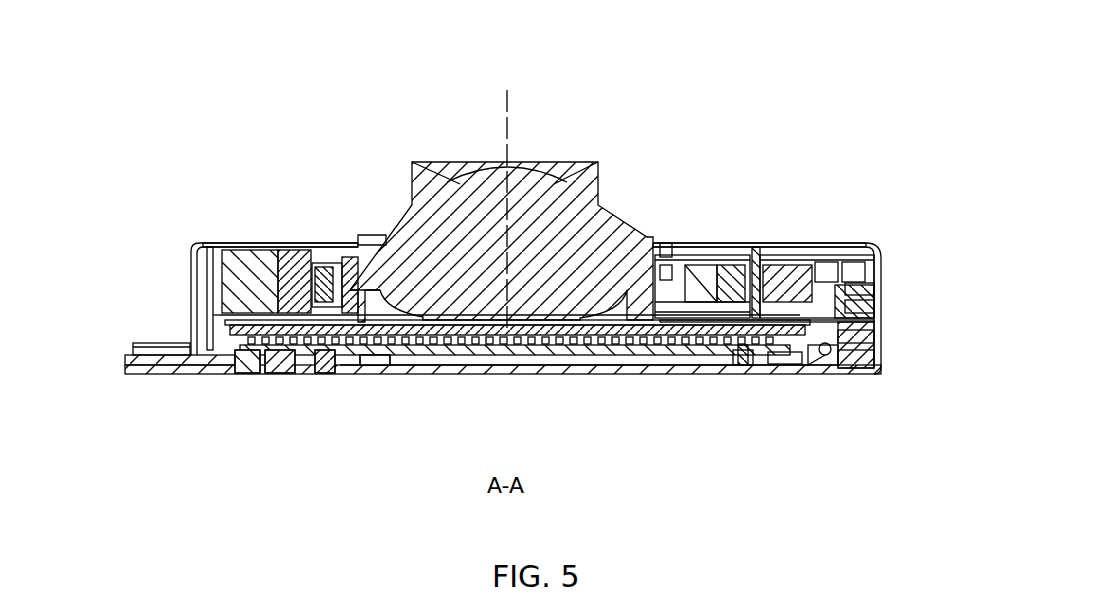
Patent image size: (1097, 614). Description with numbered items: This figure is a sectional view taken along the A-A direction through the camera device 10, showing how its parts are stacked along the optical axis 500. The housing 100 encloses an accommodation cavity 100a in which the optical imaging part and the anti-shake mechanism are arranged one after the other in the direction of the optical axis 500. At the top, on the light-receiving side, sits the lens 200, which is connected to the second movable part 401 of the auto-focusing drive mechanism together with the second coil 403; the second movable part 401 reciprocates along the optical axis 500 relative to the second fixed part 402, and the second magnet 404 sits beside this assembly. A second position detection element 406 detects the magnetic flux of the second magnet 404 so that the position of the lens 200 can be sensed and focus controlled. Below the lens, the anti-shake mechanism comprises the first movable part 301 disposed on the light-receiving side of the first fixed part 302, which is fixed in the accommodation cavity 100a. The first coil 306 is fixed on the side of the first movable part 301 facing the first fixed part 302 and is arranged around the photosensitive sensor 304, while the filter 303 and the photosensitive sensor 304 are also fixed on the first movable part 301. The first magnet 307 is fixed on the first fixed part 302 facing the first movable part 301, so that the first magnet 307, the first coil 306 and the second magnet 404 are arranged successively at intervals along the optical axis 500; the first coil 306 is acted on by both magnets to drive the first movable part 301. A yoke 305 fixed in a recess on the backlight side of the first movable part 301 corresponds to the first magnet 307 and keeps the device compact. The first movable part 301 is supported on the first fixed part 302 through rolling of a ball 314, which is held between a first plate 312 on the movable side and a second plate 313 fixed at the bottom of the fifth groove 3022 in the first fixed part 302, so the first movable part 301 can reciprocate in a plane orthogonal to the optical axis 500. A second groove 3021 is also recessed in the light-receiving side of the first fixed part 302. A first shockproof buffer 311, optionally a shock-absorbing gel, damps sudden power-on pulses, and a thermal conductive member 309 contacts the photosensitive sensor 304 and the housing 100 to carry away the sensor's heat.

The camera device 10 is at (828, 120).
The housing 100 is at (262, 250).
The accommodation cavity 100a is at (667, 247).
The lens 200 is at (600, 185).
The first movable part 301 is at (782, 325).
The first fixed part 302 is at (802, 374).
The second groove 3021 is at (737, 353).
The fifth groove 3022 is at (800, 353).
The filter 303 is at (470, 345).
The photosensitive sensor 304 is at (342, 360).
The yoke 305 is at (270, 350).
The first coil 306 is at (230, 337).
The first magnet 307 is at (305, 357).
The thermal conductive member 309 is at (372, 353).
The first shockproof buffer 311 is at (878, 288).
The first plate 312 is at (878, 313).
The second plate 313 is at (876, 365).
The ball 314 is at (878, 343).
The second movable part 401 is at (336, 262).
The second fixed part 402 is at (199, 243).
The second coil 403 is at (308, 245).
The second magnet 404 is at (283, 250).
The second position detection element 406 is at (677, 268).
The optical axis 500 is at (507, 117).